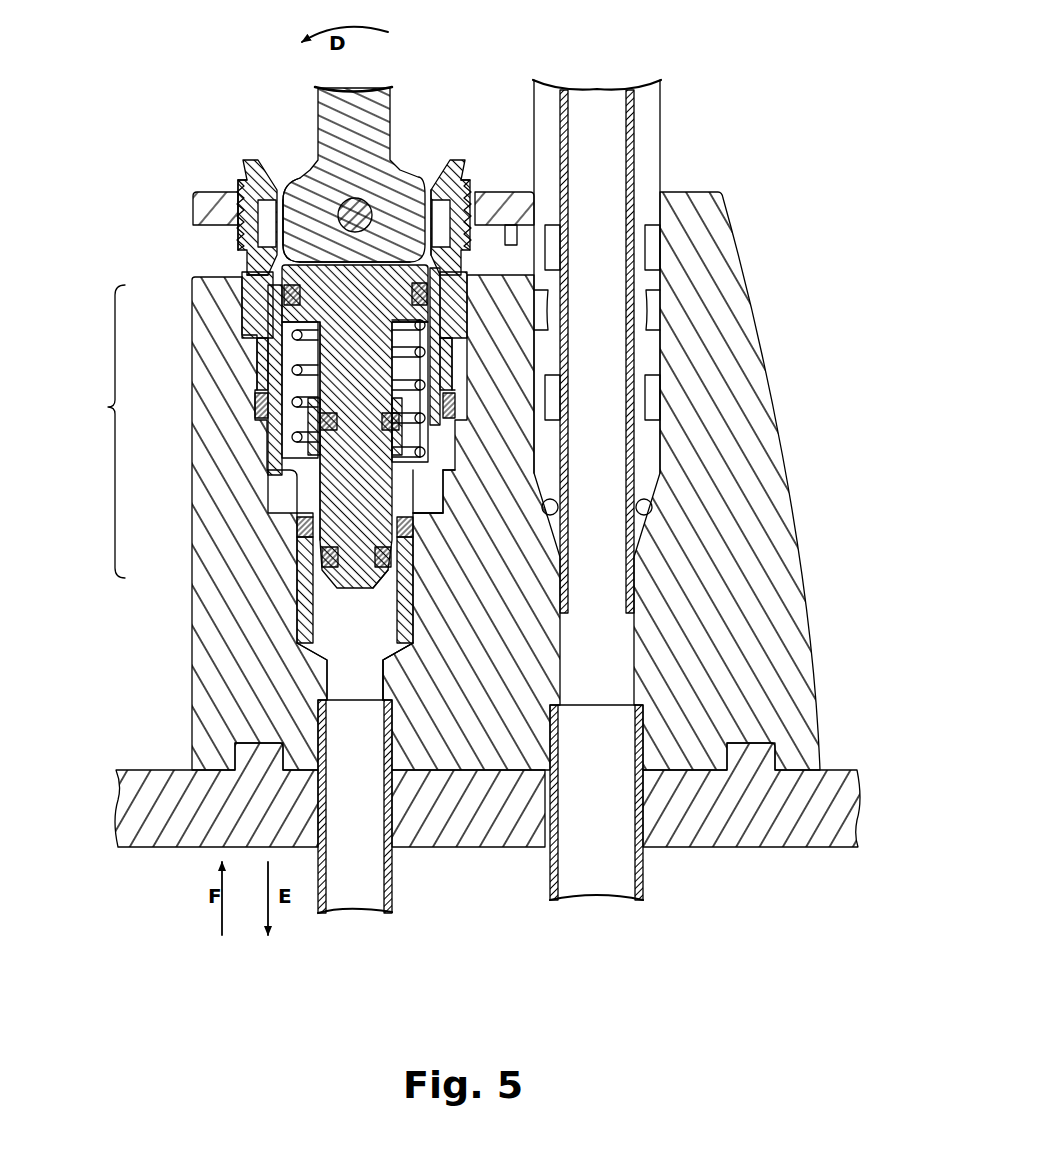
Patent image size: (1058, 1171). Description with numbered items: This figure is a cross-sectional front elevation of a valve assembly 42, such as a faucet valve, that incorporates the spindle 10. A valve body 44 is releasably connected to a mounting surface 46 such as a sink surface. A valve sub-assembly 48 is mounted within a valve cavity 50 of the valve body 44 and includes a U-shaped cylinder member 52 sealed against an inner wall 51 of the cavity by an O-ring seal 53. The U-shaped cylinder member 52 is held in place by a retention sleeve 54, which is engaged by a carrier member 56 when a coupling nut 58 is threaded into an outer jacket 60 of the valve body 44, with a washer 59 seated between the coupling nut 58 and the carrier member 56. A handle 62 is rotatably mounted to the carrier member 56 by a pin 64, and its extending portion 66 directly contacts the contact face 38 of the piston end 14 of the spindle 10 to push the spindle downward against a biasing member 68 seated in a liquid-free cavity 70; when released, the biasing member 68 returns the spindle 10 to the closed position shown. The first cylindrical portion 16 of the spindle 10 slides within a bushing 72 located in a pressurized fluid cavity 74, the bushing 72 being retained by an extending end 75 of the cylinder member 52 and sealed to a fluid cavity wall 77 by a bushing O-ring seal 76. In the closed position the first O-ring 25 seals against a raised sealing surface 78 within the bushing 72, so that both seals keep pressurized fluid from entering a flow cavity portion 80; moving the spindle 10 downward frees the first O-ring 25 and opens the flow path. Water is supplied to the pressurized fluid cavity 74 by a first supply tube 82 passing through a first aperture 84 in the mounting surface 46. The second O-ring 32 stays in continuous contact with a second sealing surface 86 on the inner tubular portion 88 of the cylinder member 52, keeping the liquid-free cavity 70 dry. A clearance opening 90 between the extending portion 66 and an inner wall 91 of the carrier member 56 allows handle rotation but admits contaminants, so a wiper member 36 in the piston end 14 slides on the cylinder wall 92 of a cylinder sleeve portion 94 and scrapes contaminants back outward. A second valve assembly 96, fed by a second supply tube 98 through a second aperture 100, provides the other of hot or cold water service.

The spindle 10 is at (345, 495).
The piston end 14 is at (357, 312).
The first cylindrical portion 16 is at (347, 590).
The first O-ring 25 is at (410, 565).
The second O-ring 32 is at (320, 422).
The wiper member 36 is at (252, 290).
The contact face 38 is at (318, 258).
The valve assembly 42 is at (148, 152).
The valve body 44 is at (208, 647).
The mounting surface 46 is at (180, 775).
The valve sub-assembly 48 is at (102, 431).
The valve cavity 50 is at (258, 376).
The inner wall 51 is at (253, 405).
The U-shaped cylinder member 52 is at (305, 468).
The O-ring seal 53 is at (456, 405).
The retention sleeve 54 is at (445, 358).
The carrier member 56 is at (262, 268).
The coupling nut 58 is at (473, 193).
The washer 59 is at (437, 212).
The outer jacket 60 is at (215, 200).
The handle 62 is at (375, 92).
The pin 64 is at (358, 212).
The extending portion 66 is at (292, 192).
The biasing member 68 is at (426, 382).
The liquid-free cavity 70 is at (422, 400).
The bushing 72 is at (296, 572).
The pressurized fluid cavity 74 is at (363, 623).
The extending end 75 is at (430, 502).
The bushing O-ring seal 76 is at (300, 527).
The fluid cavity wall 77 is at (293, 600).
The raised sealing surface 78 is at (394, 552).
The flow cavity portion 80 is at (440, 495).
The first supply tube 82 is at (390, 873).
The first aperture 84 is at (398, 818).
The second sealing surface 86 is at (386, 468).
The inner tubular portion 88 is at (275, 460).
The clearance opening 90 is at (245, 232).
The inner wall 91 is at (284, 208).
The cylinder wall 92 is at (280, 352).
The cylinder sleeve portion 94 is at (284, 300).
The second valve assembly 96 is at (668, 378).
The second supply tube 98 is at (641, 868).
The second aperture 100 is at (648, 820).